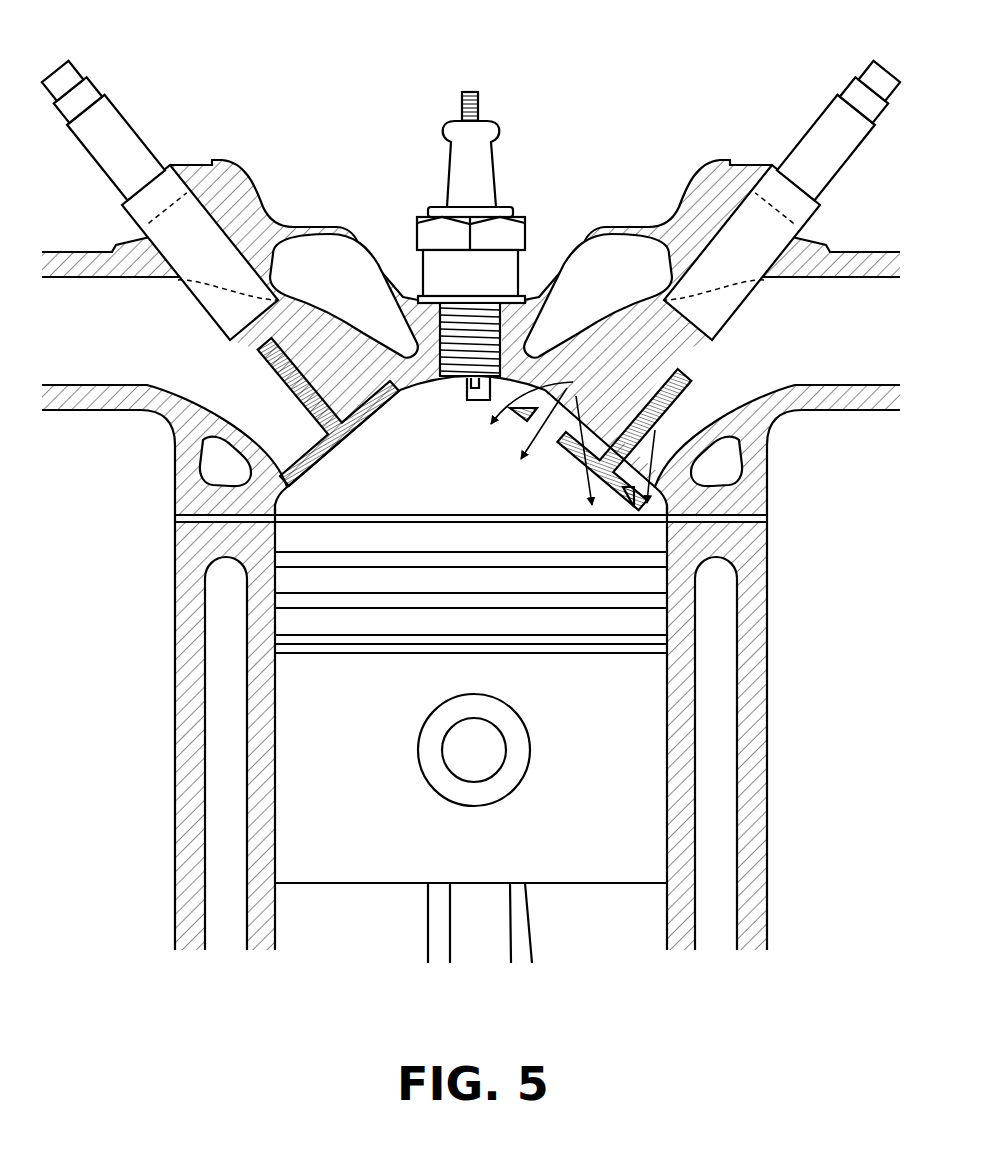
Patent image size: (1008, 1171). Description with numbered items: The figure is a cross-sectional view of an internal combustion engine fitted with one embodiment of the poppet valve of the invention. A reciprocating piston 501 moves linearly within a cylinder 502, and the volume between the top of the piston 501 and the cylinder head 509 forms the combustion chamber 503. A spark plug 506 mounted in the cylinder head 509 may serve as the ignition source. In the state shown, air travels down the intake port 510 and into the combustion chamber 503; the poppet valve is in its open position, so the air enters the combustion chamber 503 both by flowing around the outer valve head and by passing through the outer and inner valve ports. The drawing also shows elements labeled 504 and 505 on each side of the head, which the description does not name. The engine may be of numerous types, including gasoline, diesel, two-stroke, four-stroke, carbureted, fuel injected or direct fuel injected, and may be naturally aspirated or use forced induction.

The piston 501 is at (492, 851).
The cylinder 502 is at (277, 792).
The combustion chamber 503 is at (490, 487).
The injector mounting boss 504 is at (173, 183).
The fuel injector 505 is at (98, 127).
The spark plug 506 is at (452, 123).
The cylinder head 509 is at (388, 295).
The intake port 510 is at (827, 345).